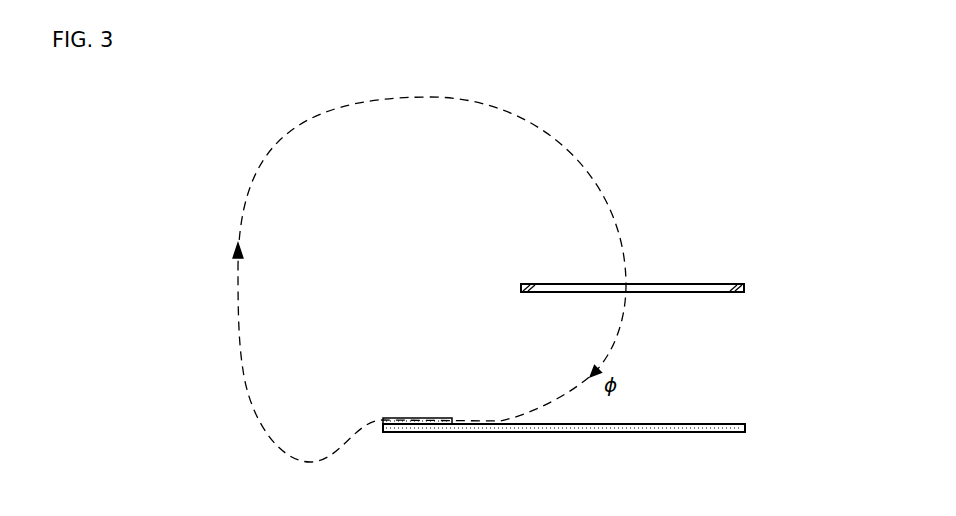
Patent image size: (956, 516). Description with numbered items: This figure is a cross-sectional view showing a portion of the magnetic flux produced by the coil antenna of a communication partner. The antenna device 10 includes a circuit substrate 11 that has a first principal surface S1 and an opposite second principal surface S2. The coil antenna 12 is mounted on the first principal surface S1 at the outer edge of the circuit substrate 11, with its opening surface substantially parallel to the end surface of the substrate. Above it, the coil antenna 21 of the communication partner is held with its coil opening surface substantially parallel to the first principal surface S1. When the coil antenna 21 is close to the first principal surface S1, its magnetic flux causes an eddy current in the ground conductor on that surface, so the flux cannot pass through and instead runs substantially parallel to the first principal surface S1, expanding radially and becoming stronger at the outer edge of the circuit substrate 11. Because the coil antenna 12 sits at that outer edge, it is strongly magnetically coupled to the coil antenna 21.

The antenna device 10 is at (754, 404).
The circuit substrate 11 is at (745, 428).
The coil antenna 12 is at (423, 425).
The coil antenna of communication partner 21 is at (745, 288).
The first principal surface S1 is at (501, 418).
The second principal surface S2 is at (501, 438).